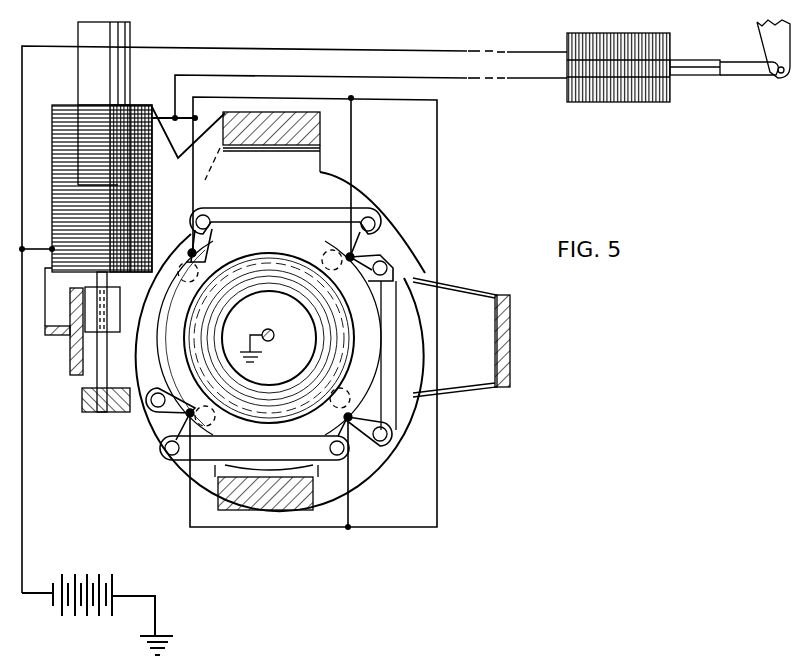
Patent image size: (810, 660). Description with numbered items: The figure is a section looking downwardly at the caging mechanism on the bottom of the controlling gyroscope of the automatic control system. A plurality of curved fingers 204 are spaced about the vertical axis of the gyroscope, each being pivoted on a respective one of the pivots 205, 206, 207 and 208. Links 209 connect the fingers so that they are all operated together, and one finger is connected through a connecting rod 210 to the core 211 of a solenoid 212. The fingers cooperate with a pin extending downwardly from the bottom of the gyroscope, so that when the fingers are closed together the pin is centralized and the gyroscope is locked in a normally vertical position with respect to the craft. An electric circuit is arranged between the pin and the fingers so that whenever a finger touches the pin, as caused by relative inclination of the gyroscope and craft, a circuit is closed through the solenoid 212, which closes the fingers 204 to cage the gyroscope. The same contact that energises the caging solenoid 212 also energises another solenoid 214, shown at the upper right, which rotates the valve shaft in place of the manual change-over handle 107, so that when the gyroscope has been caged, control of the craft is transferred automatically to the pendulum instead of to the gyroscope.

The control handle 107 is at (770, 31).
The curved fingers 204 is at (360, 318).
The pivot 205 is at (352, 257).
The pivot 206 is at (189, 252).
The pivot 207 is at (178, 420).
The pivot 208 is at (350, 420).
The links 209 is at (298, 214).
The connecting rod 210 is at (92, 378).
The core 211 is at (140, 192).
The solenoid 212 is at (143, 108).
The solenoid 214 is at (650, 40).